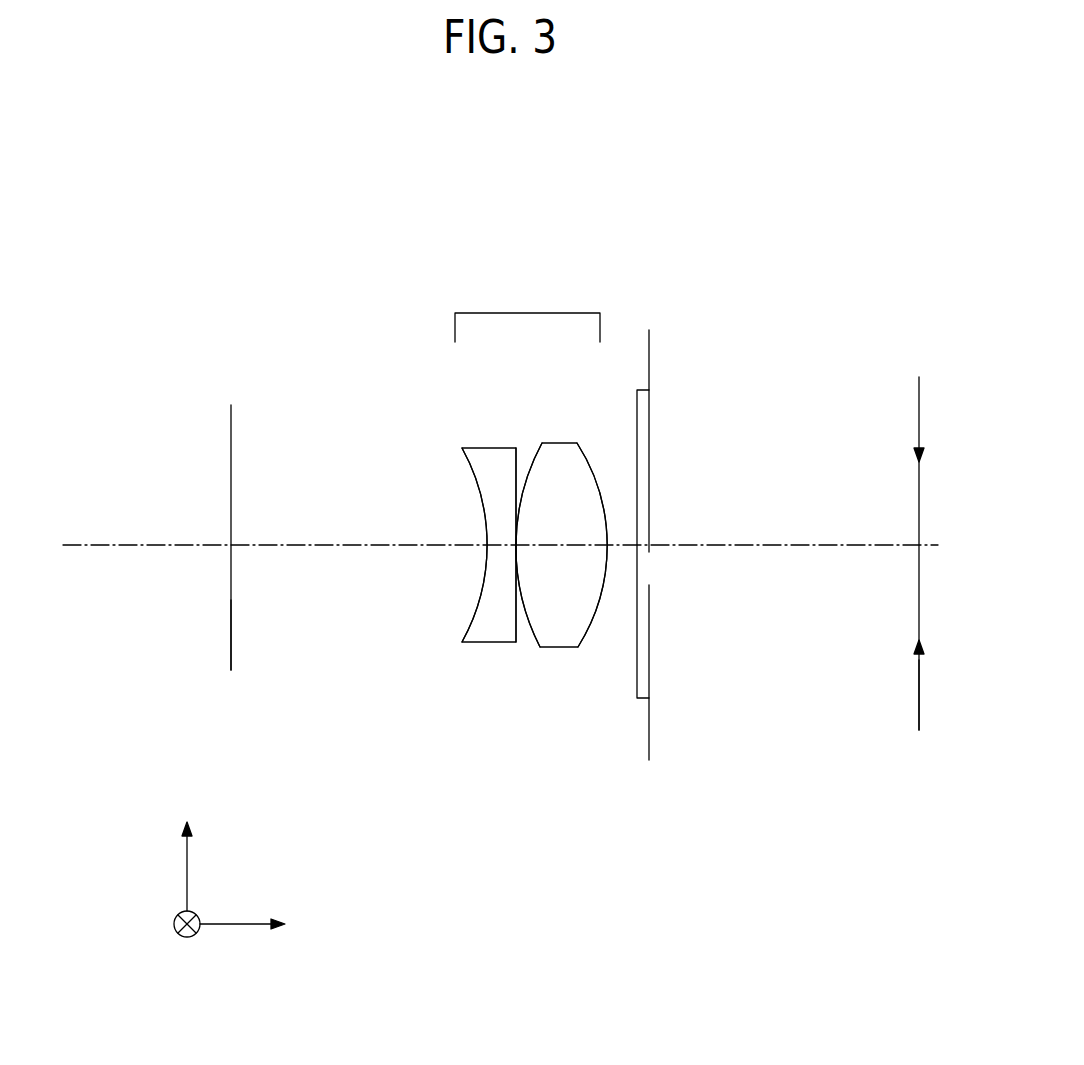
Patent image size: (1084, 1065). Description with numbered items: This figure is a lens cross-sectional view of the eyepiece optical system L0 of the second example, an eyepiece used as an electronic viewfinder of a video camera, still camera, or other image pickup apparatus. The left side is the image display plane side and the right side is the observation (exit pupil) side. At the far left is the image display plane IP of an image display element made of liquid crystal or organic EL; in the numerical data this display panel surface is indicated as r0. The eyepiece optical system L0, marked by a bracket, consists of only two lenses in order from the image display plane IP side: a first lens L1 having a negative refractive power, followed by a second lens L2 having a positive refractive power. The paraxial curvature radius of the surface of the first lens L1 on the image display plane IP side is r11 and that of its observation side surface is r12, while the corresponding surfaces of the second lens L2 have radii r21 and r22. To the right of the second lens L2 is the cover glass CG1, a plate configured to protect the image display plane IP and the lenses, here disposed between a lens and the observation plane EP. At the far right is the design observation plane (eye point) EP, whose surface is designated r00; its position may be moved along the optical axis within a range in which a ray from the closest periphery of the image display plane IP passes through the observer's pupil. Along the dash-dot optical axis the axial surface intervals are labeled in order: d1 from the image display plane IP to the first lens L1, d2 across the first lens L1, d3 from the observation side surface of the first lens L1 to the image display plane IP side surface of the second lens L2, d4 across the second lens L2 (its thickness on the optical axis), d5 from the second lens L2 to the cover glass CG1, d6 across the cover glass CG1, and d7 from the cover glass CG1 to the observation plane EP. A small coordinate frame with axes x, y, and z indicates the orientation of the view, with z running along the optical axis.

The image display plane IP is at (231, 440).
The display panel surface r0 is at (231, 670).
The eyepiece optical system L0 is at (527, 310).
The first lens L1 is at (488, 462).
The second lens L2 is at (560, 455).
The paraxial curvature radius of image display plane side surface of first lens r11 is at (468, 625).
The paraxial curvature radius of observation side surface of first lens r12 is at (500, 640).
The paraxial curvature radius of image display plane side surface of second lens r21 is at (538, 633).
The paraxial curvature radius of observation side surface of second lens r22 is at (583, 633).
The cover glass CG1 is at (643, 400).
The observation plane EP is at (935, 553).
The observation plane surface r00 is at (919, 672).
The first axial surface interval d1 is at (367, 561).
The second axial surface interval d2 is at (497, 561).
The third axial surface interval d3 is at (529, 549).
The fourth axial surface interval d4 is at (567, 561).
The fifth axial surface interval d5 is at (609, 551).
The sixth axial surface interval d6 is at (652, 561).
The seventh axial surface interval d7 is at (784, 561).
The x axis x is at (176, 918).
The y axis y is at (196, 862).
The z axis z is at (242, 909).